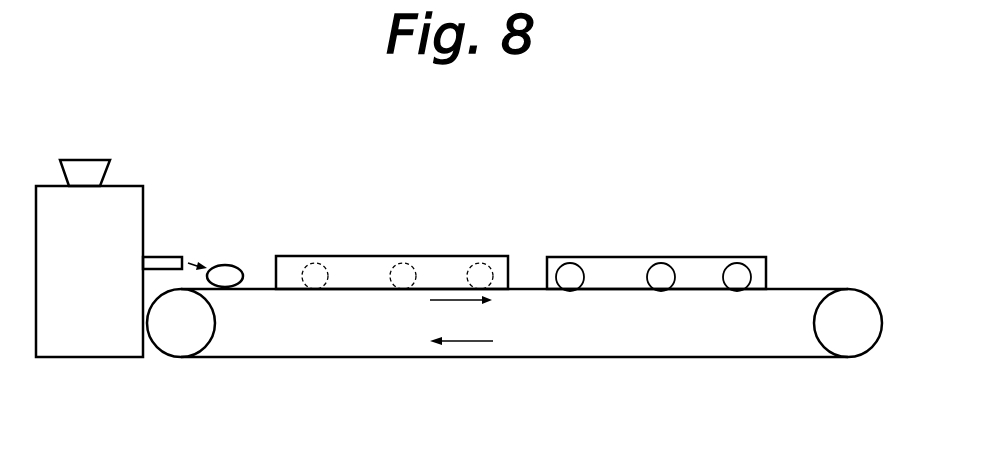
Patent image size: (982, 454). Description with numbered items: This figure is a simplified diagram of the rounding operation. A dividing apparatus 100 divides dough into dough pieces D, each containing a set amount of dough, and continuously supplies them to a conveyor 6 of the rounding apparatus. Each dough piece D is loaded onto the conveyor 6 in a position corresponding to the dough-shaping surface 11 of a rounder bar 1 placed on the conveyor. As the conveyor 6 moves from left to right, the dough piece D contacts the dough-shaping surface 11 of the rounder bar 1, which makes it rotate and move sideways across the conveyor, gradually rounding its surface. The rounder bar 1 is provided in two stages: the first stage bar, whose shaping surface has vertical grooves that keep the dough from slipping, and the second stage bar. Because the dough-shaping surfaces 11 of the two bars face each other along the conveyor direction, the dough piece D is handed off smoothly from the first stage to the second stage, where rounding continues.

The conveyor 6 is at (793, 289).
The dividing apparatus 100 is at (117, 318).
The dough piece D is at (232, 265).
The rounder bar 1 is at (355, 256).
The dough-shaping surface 11 is at (437, 268).